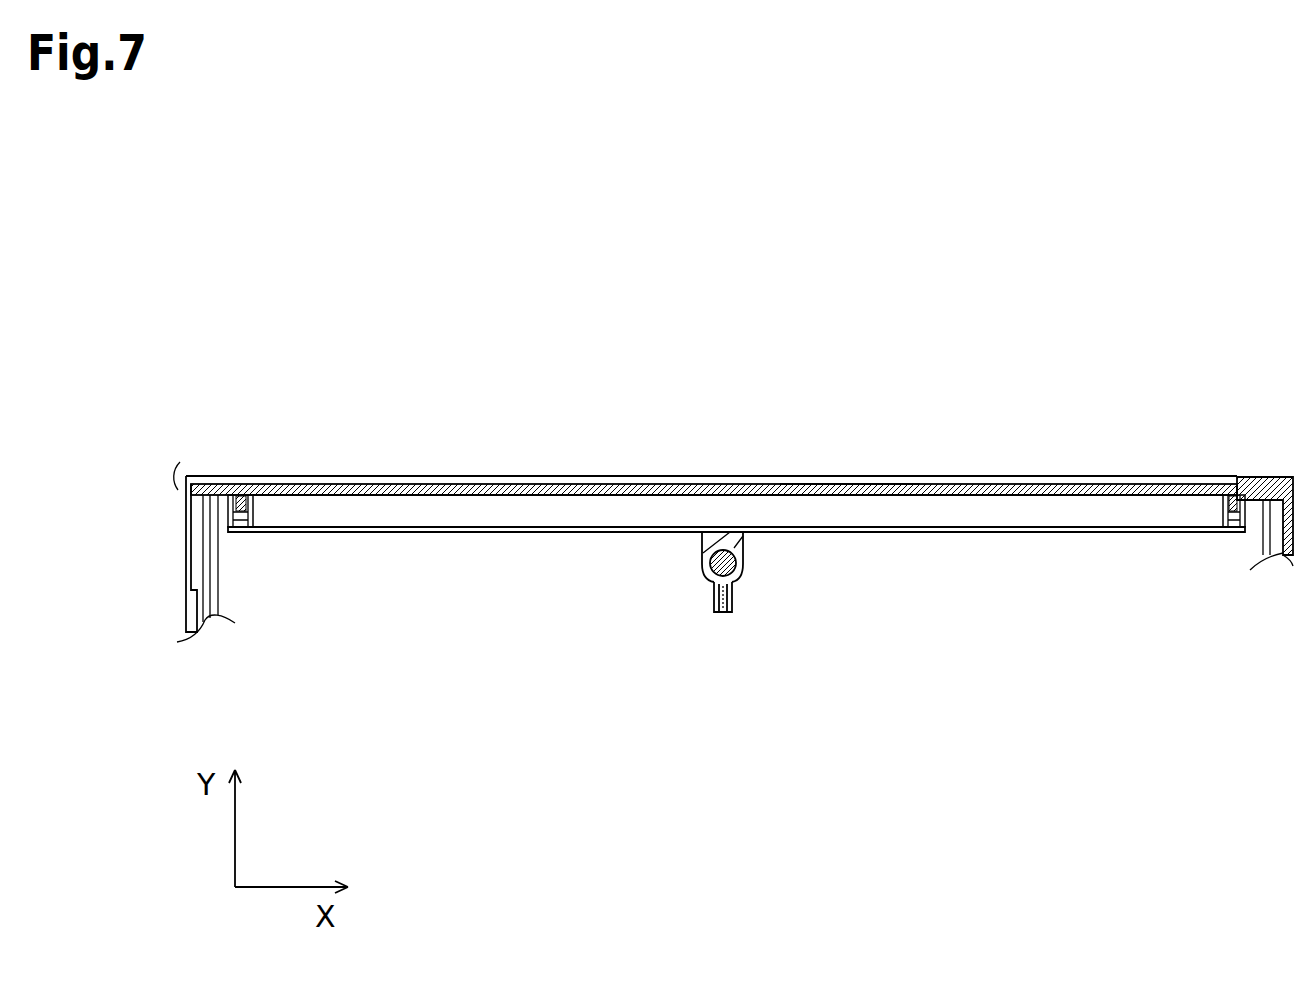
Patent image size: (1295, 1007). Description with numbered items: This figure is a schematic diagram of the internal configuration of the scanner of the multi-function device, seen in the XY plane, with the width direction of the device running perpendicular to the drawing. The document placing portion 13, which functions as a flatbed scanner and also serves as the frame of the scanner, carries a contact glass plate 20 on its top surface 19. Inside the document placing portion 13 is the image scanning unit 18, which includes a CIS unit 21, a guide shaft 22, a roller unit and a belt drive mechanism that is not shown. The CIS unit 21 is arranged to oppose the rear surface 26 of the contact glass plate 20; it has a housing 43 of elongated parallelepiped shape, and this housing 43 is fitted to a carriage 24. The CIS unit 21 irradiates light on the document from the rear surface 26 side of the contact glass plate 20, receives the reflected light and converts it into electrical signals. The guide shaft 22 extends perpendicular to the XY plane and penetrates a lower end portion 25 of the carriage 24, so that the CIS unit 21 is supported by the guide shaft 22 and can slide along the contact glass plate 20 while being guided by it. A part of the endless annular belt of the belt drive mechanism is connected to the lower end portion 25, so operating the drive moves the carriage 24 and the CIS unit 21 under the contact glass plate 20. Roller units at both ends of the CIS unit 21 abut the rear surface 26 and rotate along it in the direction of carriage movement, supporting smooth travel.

The document placing portion 13 is at (1257, 477).
The image scanning unit 18 is at (717, 546).
The top surface 19 is at (310, 477).
The contact glass plate 20 is at (558, 482).
The CIS unit 21 is at (678, 632).
The guide shaft 22 is at (742, 577).
The carriage 24 is at (1083, 533).
The lower end portion 25 is at (713, 610).
The rear surface 26 is at (847, 483).
The housing 43 is at (948, 517).